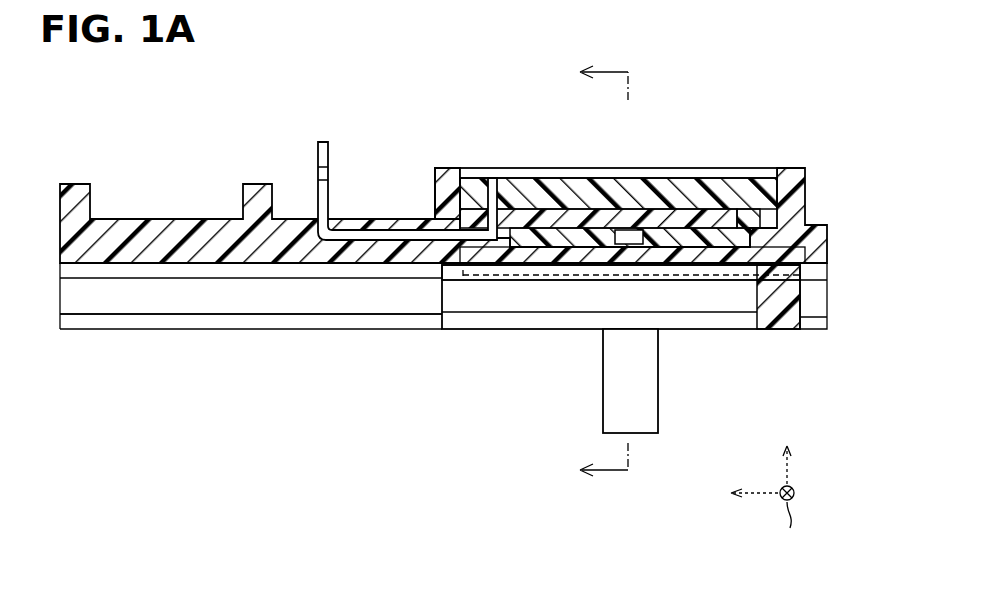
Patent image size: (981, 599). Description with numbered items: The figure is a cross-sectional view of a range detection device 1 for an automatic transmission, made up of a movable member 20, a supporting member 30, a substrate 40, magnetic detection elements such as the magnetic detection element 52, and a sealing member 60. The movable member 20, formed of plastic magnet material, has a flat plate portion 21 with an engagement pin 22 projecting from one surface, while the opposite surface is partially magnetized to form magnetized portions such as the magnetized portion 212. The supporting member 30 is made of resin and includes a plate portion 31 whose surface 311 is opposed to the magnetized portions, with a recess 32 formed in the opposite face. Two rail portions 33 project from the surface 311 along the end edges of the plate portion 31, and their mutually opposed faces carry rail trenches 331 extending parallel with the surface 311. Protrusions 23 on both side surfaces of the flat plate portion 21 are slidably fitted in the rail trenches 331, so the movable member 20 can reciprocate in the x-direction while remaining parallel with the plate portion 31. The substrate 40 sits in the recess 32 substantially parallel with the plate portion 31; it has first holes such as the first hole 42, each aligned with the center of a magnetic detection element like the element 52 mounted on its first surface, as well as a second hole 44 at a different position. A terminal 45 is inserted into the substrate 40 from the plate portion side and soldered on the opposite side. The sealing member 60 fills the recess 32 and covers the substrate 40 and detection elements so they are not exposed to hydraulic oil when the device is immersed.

The range detection device 1 is at (420, 138).
The movable member 20 is at (634, 356).
The flat plate portion 21 is at (493, 330).
The engagement pin 22 is at (658, 412).
The protrusions 23 is at (455, 267).
The magnetized portion 212 is at (527, 283).
The supporting member 30 is at (207, 218).
The plate portion 31 is at (722, 266).
The surface 311 is at (683, 256).
The recess 32 is at (463, 168).
The rail portions 33 is at (102, 330).
The rail trenches 331 is at (168, 279).
The substrate 40 is at (610, 242).
The first hole 42 is at (617, 209).
The second hole 44 is at (727, 209).
The terminal 45 is at (330, 196).
The magnetic detection element 52 is at (622, 246).
The sealing member 60 is at (747, 178).